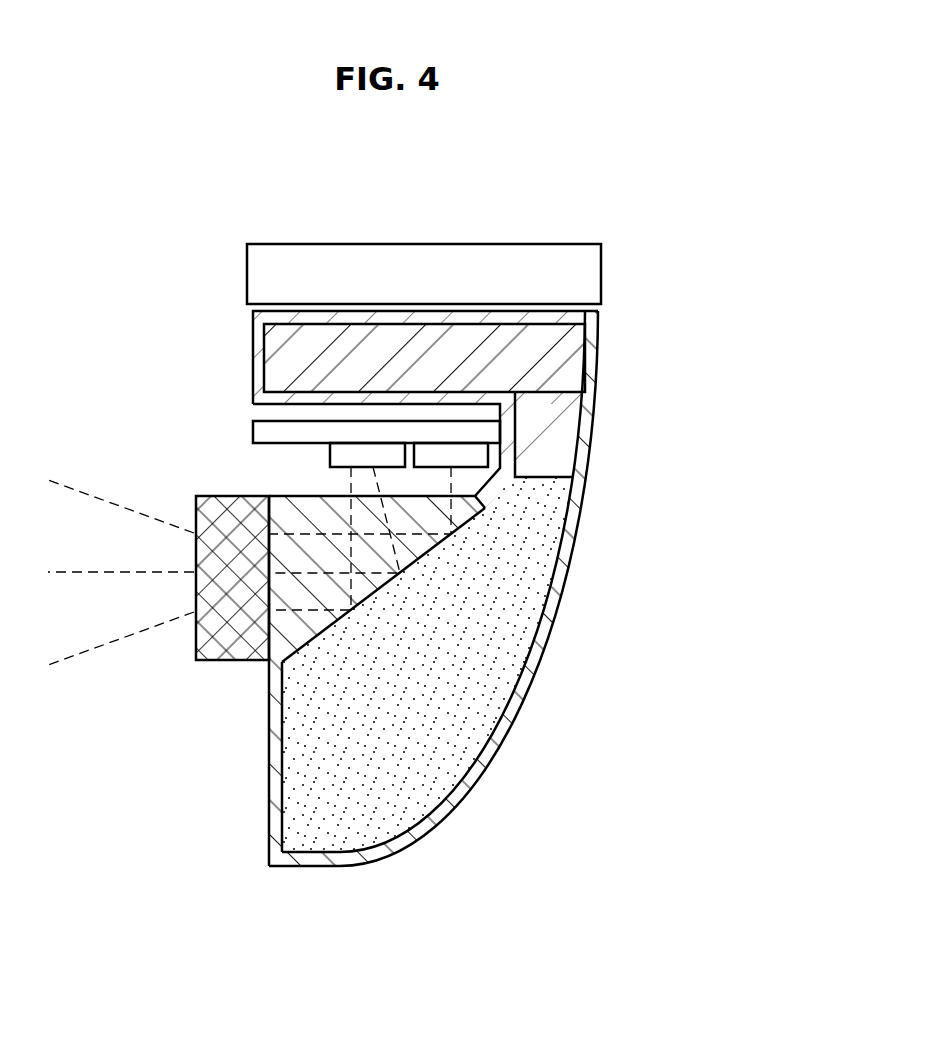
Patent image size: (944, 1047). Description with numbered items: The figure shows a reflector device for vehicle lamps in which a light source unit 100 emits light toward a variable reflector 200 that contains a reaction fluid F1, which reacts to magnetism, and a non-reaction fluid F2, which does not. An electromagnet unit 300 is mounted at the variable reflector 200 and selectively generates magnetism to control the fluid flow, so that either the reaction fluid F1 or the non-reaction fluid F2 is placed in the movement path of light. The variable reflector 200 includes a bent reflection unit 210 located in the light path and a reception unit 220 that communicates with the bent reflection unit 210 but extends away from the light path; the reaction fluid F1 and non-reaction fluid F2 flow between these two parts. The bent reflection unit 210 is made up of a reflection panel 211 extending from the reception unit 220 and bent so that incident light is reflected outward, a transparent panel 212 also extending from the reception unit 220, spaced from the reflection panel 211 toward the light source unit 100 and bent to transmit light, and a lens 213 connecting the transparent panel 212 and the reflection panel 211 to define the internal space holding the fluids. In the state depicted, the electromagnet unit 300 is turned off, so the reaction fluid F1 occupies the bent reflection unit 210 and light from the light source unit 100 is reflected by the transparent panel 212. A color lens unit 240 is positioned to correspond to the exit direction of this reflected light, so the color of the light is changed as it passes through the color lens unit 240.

The electromagnet unit 300 is at (354, 238).
The reception unit 220 is at (450, 409).
The non-reaction fluid F2 is at (292, 362).
The light source unit 100 is at (316, 451).
The variable reflector 200 is at (450, 662).
The reaction fluid F1 is at (487, 702).
The color lens unit 240 is at (196, 657).
The bent reflection unit 210 is at (409, 662).
The reflection panel 211 is at (265, 943).
The transparent panel 212 is at (372, 583).
The lens 213 is at (270, 767).